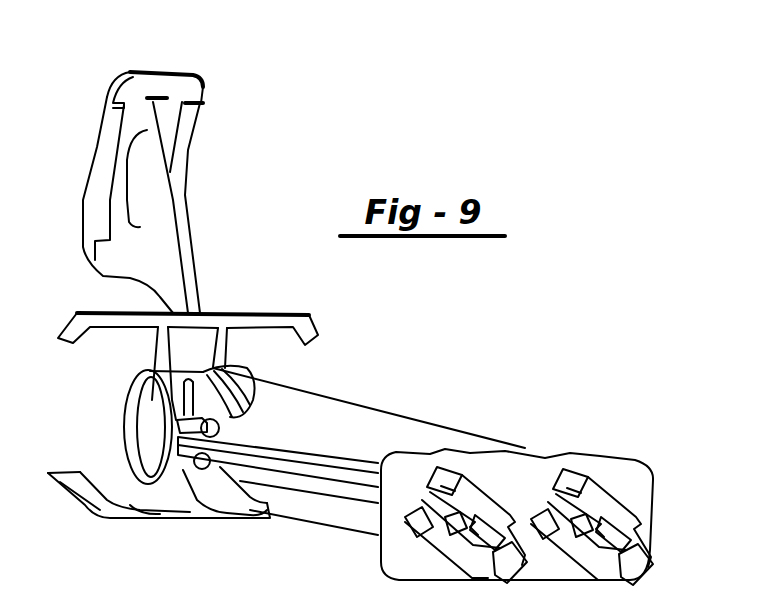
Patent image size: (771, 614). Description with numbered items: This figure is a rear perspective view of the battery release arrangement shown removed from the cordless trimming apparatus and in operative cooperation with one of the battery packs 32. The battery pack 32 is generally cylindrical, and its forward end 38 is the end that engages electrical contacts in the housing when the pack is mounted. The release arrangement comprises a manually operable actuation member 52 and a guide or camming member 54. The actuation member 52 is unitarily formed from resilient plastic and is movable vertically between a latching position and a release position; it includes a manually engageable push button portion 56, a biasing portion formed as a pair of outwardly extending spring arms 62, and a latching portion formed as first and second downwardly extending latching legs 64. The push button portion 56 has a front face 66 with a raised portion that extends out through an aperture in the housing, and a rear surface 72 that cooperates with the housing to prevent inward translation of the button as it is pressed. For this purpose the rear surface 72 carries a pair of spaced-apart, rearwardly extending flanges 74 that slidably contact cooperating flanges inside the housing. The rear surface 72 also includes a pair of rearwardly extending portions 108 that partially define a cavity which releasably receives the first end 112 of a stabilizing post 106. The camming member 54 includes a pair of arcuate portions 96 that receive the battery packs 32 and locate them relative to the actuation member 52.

The battery pack 32 is at (303, 418).
The forward end 38 is at (514, 448).
The actuation member 52 is at (180, 222).
The camming member 54 is at (158, 514).
The push button portion 56 is at (178, 310).
The spring arms 62 is at (115, 312).
The latching legs 64 is at (138, 375).
The front face 66 is at (193, 613).
The rear surface 72 is at (130, 88).
The flanges 74 is at (120, 133).
The arcuate portions 96 is at (133, 493).
The stabilizing post 106 is at (302, 466).
The rearwardly extending portions 108 is at (165, 397).
The first end 112 is at (272, 381).